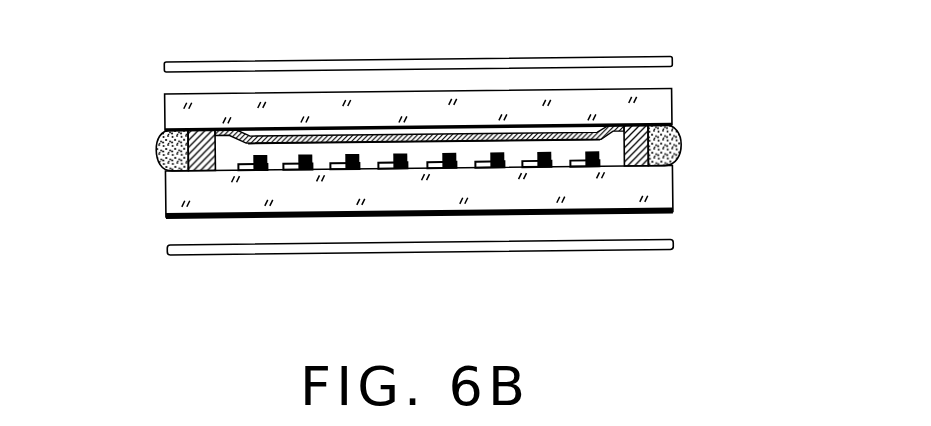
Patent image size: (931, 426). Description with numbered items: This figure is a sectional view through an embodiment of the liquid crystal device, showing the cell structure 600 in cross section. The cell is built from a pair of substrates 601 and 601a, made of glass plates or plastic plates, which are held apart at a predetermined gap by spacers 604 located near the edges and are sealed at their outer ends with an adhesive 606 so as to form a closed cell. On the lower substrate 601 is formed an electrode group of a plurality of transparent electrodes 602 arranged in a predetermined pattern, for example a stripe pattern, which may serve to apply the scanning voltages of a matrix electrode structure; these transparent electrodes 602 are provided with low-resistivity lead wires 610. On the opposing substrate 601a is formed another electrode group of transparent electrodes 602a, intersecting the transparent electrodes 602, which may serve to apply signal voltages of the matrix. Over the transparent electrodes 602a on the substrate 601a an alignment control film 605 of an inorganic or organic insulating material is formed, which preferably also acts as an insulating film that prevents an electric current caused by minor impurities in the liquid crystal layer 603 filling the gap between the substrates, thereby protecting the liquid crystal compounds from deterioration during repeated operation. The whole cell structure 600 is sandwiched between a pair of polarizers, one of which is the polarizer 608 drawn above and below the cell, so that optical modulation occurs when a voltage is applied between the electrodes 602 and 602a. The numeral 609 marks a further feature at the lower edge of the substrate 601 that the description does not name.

The cell structure 600 is at (808, 88).
The substrate 601 is at (658, 192).
The substrate 601a is at (656, 111).
The transparent electrodes 602 is at (297, 164).
The transparent electrodes 602a is at (541, 137).
The liquid crystal layer 603 is at (324, 155).
The spacers 604 is at (200, 132).
The alignment control film 605 is at (421, 151).
The adhesive 606 is at (159, 156).
The polarizer 608 is at (674, 60).
The bottom edge of lower substrate 609 is at (185, 222).
The lead wires 610 is at (451, 152).